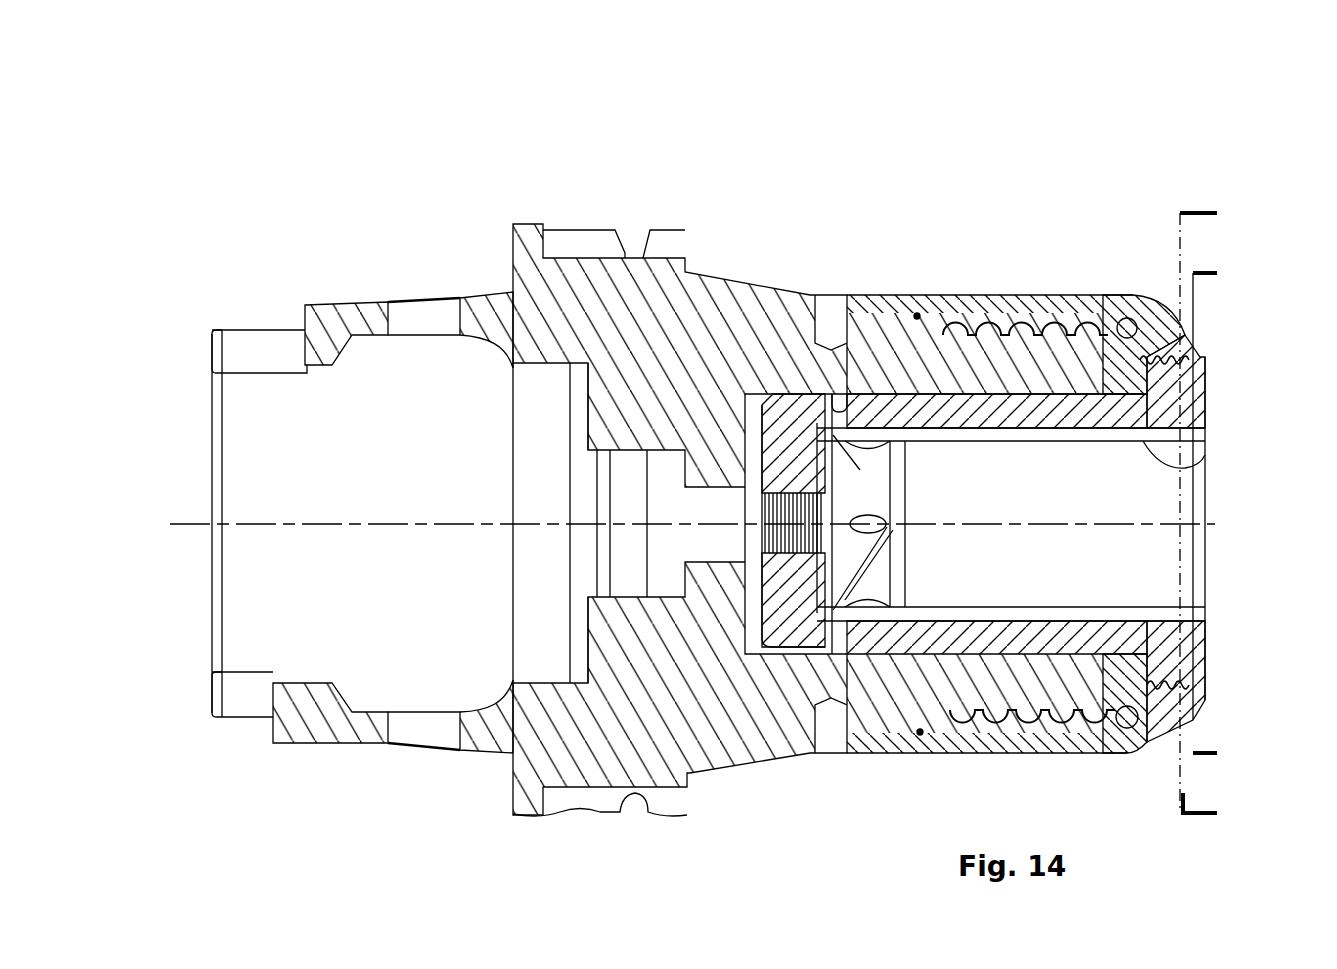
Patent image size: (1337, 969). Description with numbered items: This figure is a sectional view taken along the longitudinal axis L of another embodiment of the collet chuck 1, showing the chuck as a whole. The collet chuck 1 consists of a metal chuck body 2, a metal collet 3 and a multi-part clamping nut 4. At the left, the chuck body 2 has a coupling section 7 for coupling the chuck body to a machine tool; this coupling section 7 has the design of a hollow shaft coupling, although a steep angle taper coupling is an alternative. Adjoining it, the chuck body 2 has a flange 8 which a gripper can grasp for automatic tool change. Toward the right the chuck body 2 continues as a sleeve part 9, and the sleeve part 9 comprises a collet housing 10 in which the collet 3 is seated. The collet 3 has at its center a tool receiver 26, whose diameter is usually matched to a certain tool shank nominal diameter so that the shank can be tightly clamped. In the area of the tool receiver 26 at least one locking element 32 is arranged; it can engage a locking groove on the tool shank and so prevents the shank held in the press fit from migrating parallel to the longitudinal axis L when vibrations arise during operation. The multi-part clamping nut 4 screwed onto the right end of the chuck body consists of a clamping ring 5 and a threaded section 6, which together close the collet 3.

The collet chuck 1 is at (424, 190).
The chuck body 2 is at (698, 318).
The collet 3 is at (930, 413).
The multi-part clamping nut 4 is at (1167, 302).
The clamping ring 5 is at (1187, 333).
The threaded section 6 is at (960, 295).
The coupling section 7 is at (335, 325).
The flange 8 is at (585, 245).
The sleeve part 9 is at (1200, 685).
The collet housing 10 is at (995, 392).
The tool receiver 26 is at (1207, 460).
The locking element 32 is at (838, 608).
The longitudinal axis L is at (250, 517).